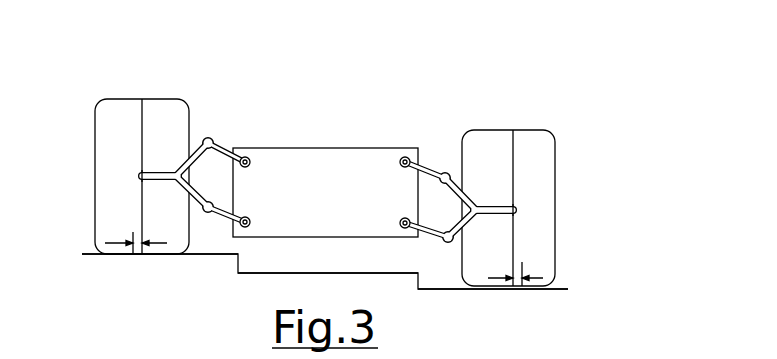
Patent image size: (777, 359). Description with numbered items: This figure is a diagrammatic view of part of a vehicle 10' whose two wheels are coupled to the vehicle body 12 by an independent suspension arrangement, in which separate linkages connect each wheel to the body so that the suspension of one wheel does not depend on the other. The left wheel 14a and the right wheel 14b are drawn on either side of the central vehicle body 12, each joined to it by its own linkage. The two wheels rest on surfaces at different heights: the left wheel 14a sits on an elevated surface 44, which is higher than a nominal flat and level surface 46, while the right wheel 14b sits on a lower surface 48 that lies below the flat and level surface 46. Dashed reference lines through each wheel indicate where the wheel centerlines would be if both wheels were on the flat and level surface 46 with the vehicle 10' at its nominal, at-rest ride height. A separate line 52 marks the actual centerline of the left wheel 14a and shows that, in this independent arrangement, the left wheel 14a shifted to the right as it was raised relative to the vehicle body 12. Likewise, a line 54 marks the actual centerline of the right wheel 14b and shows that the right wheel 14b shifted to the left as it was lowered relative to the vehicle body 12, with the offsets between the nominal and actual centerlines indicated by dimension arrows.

The vehicle 10' is at (652, 154).
The vehicle body 12 is at (362, 162).
The left wheel 14a is at (174, 112).
The right wheel 14b is at (553, 141).
The elevated surface 44 is at (214, 254).
The flat and level surface 46 is at (277, 272).
The lower surface 48 is at (453, 289).
The line 52 is at (142, 148).
The line 54 is at (513, 148).